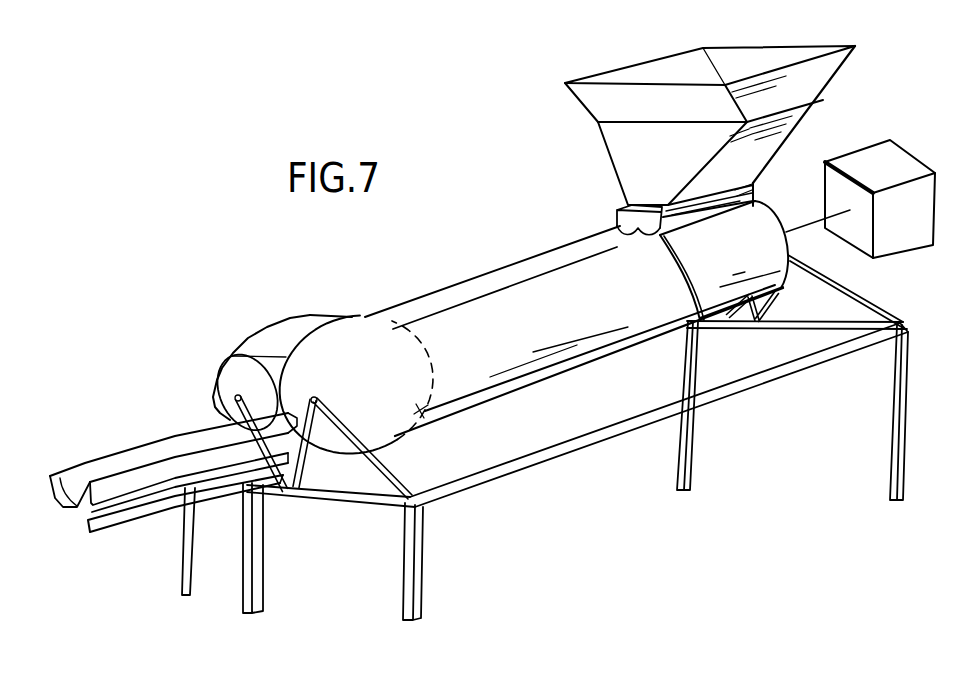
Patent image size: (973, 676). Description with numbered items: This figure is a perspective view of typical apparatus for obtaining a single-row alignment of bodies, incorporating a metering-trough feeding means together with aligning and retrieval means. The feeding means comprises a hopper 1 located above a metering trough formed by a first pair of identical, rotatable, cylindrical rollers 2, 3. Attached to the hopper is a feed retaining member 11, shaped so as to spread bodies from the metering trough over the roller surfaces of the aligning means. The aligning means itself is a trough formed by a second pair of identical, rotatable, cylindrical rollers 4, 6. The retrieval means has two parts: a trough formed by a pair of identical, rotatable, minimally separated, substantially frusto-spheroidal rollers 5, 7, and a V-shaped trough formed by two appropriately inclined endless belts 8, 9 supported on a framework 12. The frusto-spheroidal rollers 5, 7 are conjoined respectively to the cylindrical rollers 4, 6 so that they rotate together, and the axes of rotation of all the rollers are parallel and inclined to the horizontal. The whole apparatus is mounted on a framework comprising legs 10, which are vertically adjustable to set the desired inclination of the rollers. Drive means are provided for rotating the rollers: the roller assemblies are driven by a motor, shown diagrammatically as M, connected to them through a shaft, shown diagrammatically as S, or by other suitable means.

The hopper 1 is at (803, 130).
The cylindrical roller 2 is at (761, 225).
The cylindrical roller 3 is at (647, 236).
The cylindrical roller 4 is at (621, 331).
The frusto-spheroidal roller 5 is at (422, 411).
The cylindrical roller 6 is at (527, 276).
The frusto-spheroidal roller 7 is at (283, 330).
The endless belt 8 is at (77, 478).
The endless belt 9 is at (170, 473).
The legs 10 is at (698, 452).
The feed retaining member 11 is at (617, 216).
The framework 12 is at (257, 533).
The motor M is at (903, 162).
The shaft S is at (805, 226).